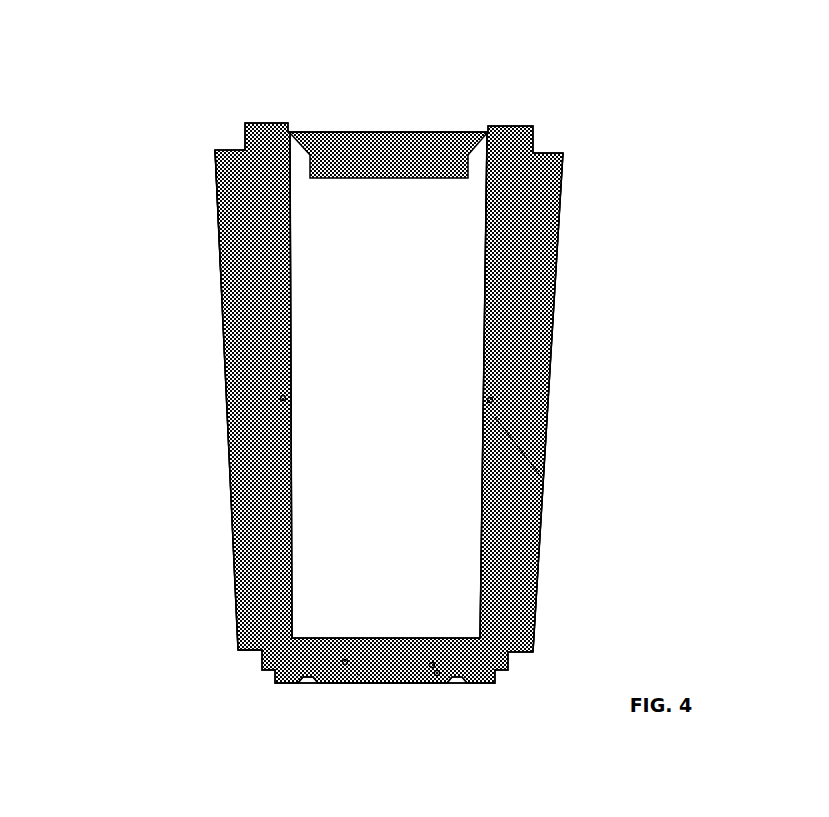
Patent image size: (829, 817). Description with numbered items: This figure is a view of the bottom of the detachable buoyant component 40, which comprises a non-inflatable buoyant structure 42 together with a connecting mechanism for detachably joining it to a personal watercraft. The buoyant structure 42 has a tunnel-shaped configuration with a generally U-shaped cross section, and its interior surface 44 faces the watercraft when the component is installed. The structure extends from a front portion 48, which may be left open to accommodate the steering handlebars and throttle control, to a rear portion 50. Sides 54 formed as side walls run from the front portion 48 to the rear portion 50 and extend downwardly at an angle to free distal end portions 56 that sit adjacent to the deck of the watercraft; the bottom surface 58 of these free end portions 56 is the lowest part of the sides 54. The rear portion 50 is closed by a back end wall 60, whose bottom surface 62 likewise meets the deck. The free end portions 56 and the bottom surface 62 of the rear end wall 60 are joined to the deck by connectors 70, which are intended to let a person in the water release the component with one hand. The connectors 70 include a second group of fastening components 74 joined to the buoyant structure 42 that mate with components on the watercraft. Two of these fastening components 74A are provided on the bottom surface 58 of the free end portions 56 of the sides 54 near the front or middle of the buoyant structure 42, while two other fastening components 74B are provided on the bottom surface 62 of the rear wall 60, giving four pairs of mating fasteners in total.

The detachable buoyant component 40 is at (516, 84).
The buoyant structure 42 is at (603, 167).
The interior surface 44 is at (343, 515).
The front portion 48 is at (395, 127).
The rear portion 50 is at (383, 692).
The sides 54 is at (228, 470).
The free distal end portions 56 is at (250, 311).
The bottom surface of the sides 58 is at (245, 226).
The back end wall 60 is at (328, 678).
The bottom surface of the rear end wall 62 is at (407, 667).
The connectors 70 is at (278, 395).
The second group of fastening components 74 is at (542, 478).
The fastening components on the sides 74A is at (283, 398).
The fastening components on the rear wall 74B is at (345, 662).